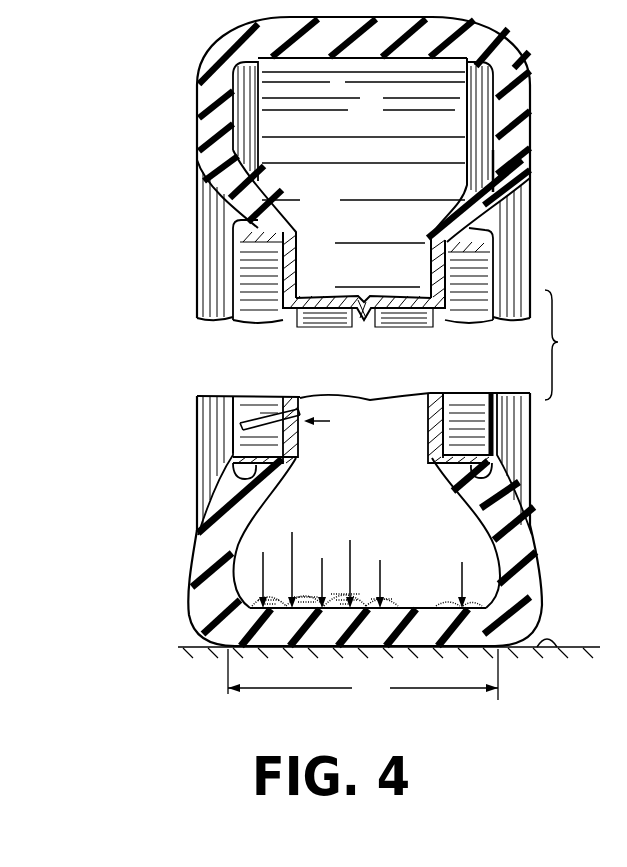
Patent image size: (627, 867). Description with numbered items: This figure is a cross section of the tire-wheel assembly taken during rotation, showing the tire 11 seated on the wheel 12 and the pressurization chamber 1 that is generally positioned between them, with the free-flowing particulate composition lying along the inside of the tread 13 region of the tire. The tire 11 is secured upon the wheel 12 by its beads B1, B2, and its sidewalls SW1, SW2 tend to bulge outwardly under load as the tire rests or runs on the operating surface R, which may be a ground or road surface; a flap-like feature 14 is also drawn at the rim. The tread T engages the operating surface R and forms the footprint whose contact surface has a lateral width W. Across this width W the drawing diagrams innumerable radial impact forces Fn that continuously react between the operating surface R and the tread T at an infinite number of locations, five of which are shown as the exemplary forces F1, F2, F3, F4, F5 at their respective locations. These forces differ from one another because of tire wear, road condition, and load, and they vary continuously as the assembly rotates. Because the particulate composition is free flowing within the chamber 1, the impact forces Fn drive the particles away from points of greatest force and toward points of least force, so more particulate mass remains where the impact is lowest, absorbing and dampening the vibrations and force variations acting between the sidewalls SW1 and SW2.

The pressurization chamber 1 is at (368, 109).
The tire 11 is at (513, 118).
The wheel 12 is at (463, 307).
The gap direction arrow 13 is at (328, 422).
The tamper flap 14 is at (270, 404).
The bead B1 is at (253, 474).
The bead B2 is at (488, 471).
The sidewall SW1 is at (198, 539).
The sidewall SW2 is at (521, 529).
The tread T is at (401, 649).
The lateral width W is at (363, 674).
The operating surface R is at (548, 644).
The impact force F1 is at (263, 567).
The impact force F2 is at (297, 562).
The impact force F3 is at (323, 560).
The impact force F4 is at (350, 546).
The impact force F5 is at (400, 556).
The radial impact forces Fn is at (463, 566).